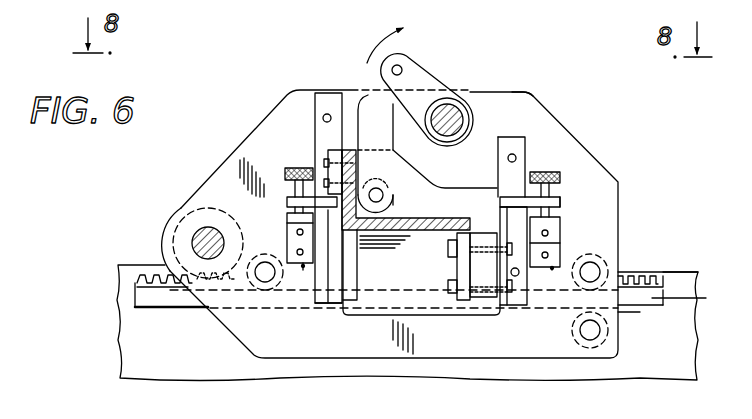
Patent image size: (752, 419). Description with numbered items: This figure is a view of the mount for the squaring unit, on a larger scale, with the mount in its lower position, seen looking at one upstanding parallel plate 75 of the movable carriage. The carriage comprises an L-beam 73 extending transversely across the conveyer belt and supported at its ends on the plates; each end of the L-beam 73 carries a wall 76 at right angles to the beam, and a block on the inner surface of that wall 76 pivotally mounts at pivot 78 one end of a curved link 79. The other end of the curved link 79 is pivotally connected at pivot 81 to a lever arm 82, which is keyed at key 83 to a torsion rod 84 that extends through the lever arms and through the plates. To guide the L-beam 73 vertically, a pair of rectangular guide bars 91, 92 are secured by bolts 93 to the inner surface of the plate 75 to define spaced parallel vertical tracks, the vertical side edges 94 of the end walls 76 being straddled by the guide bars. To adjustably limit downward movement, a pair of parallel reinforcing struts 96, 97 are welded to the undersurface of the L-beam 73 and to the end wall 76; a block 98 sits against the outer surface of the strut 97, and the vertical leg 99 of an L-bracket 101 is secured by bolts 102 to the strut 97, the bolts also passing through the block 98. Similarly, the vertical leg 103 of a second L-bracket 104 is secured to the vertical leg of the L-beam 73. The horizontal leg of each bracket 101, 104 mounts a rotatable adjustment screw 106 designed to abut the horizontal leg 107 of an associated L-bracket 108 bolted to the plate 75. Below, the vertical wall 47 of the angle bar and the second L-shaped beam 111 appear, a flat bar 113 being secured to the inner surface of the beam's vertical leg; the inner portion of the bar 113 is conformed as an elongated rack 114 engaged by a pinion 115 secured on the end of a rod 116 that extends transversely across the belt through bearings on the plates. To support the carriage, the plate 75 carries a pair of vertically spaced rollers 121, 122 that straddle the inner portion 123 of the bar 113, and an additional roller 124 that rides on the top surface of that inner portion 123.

The vertical wall 47 is at (682, 280).
The L-beam 73 is at (412, 240).
The upstanding parallel plate 75 is at (553, 138).
The wall 76 is at (450, 197).
The pivot 78 is at (384, 195).
The curved link 79 is at (366, 106).
The pivot 81 is at (402, 67).
The lever arm 82 is at (432, 86).
The key 83 is at (433, 134).
The torsion rod 84 is at (468, 93).
The rectangular guide bar 91 is at (528, 173).
The rectangular guide bar 92 is at (322, 128).
The bolt 93 is at (327, 114).
The vertical side edge 94 is at (457, 182).
The reinforcing strut 96 is at (340, 305).
The reinforcing strut 97 is at (448, 284).
The block 98 is at (487, 298).
The vertical leg 99 is at (560, 238).
The L-bracket 101 is at (563, 198).
The bolt 102 is at (450, 248).
The vertical leg 103 is at (330, 156).
The L-bracket 104 is at (385, 175).
The rotatable adjustment screw 106 is at (257, 132).
The horizontal leg 107 is at (295, 217).
The L-bracket 108 is at (303, 271).
The L-shaped beam 111 is at (673, 364).
The flat bar 113 is at (638, 313).
The elongated rack 114 is at (140, 281).
The pinion 115 is at (182, 203).
The rod 116 is at (210, 227).
The roller 121 is at (597, 265).
The roller 122 is at (590, 336).
The inner portion 123 is at (698, 310).
The additional roller 124 is at (263, 278).